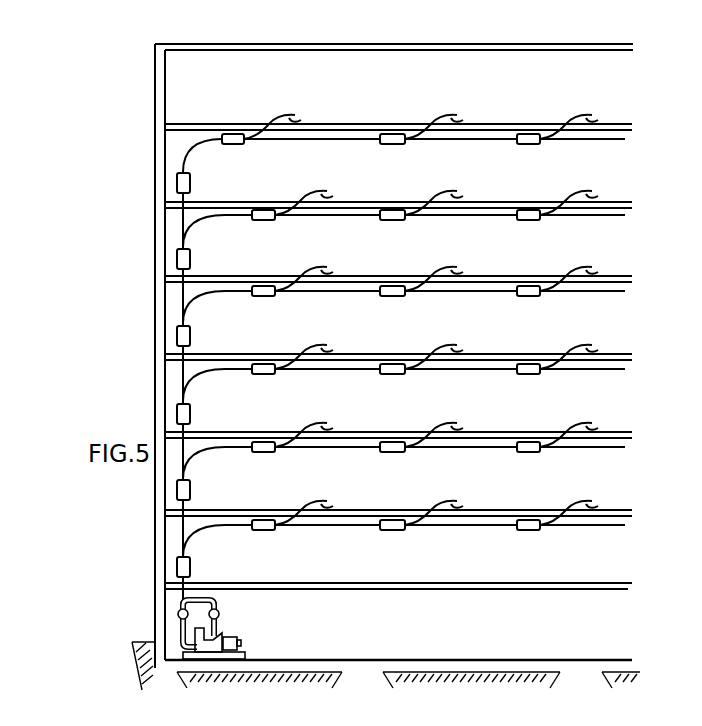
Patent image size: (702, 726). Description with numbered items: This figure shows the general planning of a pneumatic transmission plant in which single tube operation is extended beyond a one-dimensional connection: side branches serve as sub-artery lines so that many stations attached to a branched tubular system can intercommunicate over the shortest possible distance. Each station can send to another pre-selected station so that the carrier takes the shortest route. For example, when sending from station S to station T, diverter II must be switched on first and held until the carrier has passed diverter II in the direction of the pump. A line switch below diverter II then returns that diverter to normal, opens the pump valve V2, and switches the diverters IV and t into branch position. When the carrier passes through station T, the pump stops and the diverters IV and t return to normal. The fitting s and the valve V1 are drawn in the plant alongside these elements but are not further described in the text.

The diverter IV is at (193, 336).
The diverter II is at (190, 490).
The station T is at (435, 267).
The diverter t is at (392, 299).
The station S is at (437, 425).
The pipe fitting / coupling s is at (392, 456).
The pump inlet valve V1 is at (178, 614).
The pump valve V2 is at (219, 614).